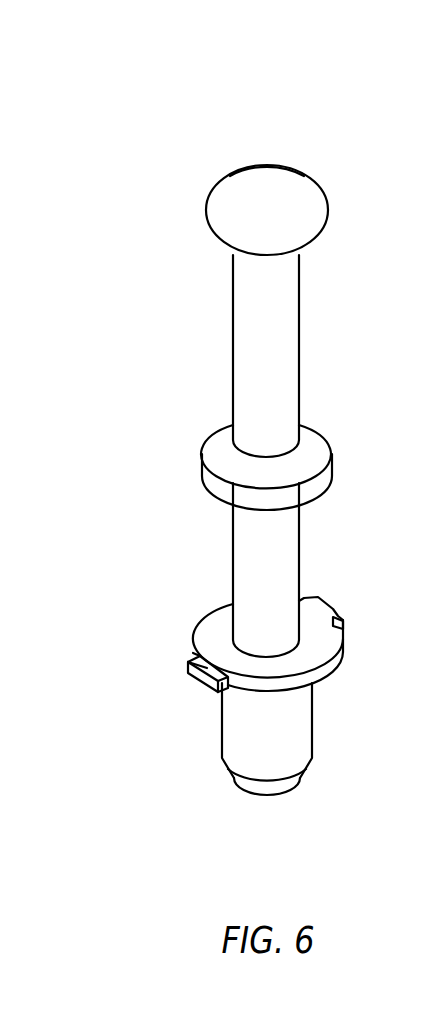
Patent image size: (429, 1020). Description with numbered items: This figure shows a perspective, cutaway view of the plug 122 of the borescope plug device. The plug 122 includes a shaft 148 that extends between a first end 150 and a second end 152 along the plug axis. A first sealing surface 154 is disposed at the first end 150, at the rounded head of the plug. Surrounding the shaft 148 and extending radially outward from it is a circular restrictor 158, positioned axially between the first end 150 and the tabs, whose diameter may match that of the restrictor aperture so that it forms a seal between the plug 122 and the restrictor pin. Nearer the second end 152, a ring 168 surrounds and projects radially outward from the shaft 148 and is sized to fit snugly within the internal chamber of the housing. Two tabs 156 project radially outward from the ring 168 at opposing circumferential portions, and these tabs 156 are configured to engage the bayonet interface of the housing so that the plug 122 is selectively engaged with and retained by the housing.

The plug 122 is at (354, 117).
The first end 150 is at (237, 150).
The first sealing surface 154 is at (276, 165).
The shaft 148 is at (233, 305).
The circular restrictor 158 is at (214, 438).
The ring 168 is at (308, 661).
The tab 156 is at (333, 608).
The second end 152 is at (262, 812).